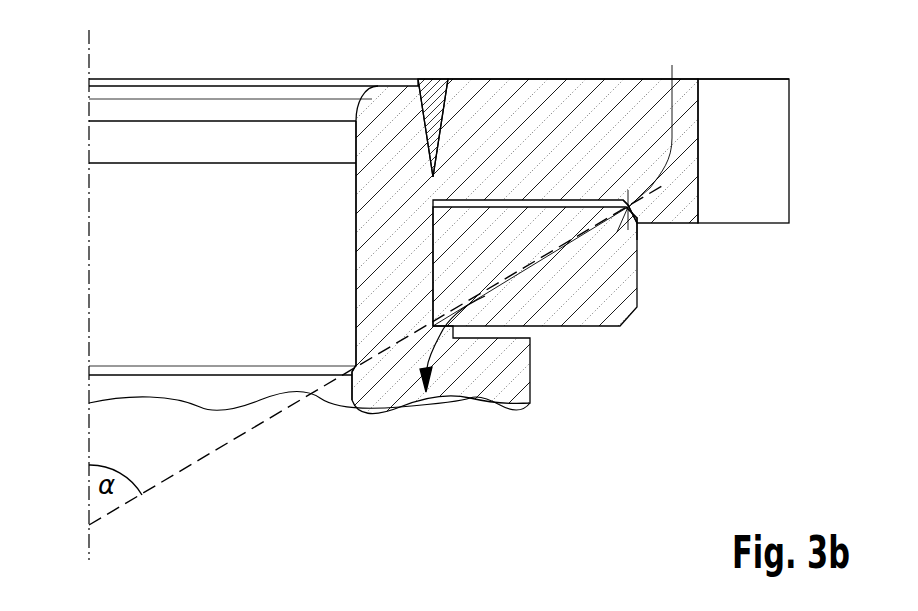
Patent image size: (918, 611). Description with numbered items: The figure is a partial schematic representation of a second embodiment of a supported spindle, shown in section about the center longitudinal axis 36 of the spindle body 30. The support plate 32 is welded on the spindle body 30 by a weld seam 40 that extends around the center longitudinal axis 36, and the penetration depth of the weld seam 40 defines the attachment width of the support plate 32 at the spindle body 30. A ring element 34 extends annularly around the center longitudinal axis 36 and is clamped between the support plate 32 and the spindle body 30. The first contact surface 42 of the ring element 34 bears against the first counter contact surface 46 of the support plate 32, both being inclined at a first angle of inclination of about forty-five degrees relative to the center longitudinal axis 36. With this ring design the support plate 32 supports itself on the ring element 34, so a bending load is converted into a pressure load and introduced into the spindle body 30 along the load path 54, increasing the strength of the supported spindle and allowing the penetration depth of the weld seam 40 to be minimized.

The spindle body 30 is at (393, 372).
The support plate 32 is at (757, 148).
The ring element 34 is at (578, 297).
The center longitudinal axis 36 is at (89, 428).
The weld seam 40 is at (435, 88).
The first contact surface 42 is at (633, 203).
The first counter contact surface 46 is at (632, 218).
The load path 54 is at (668, 115).